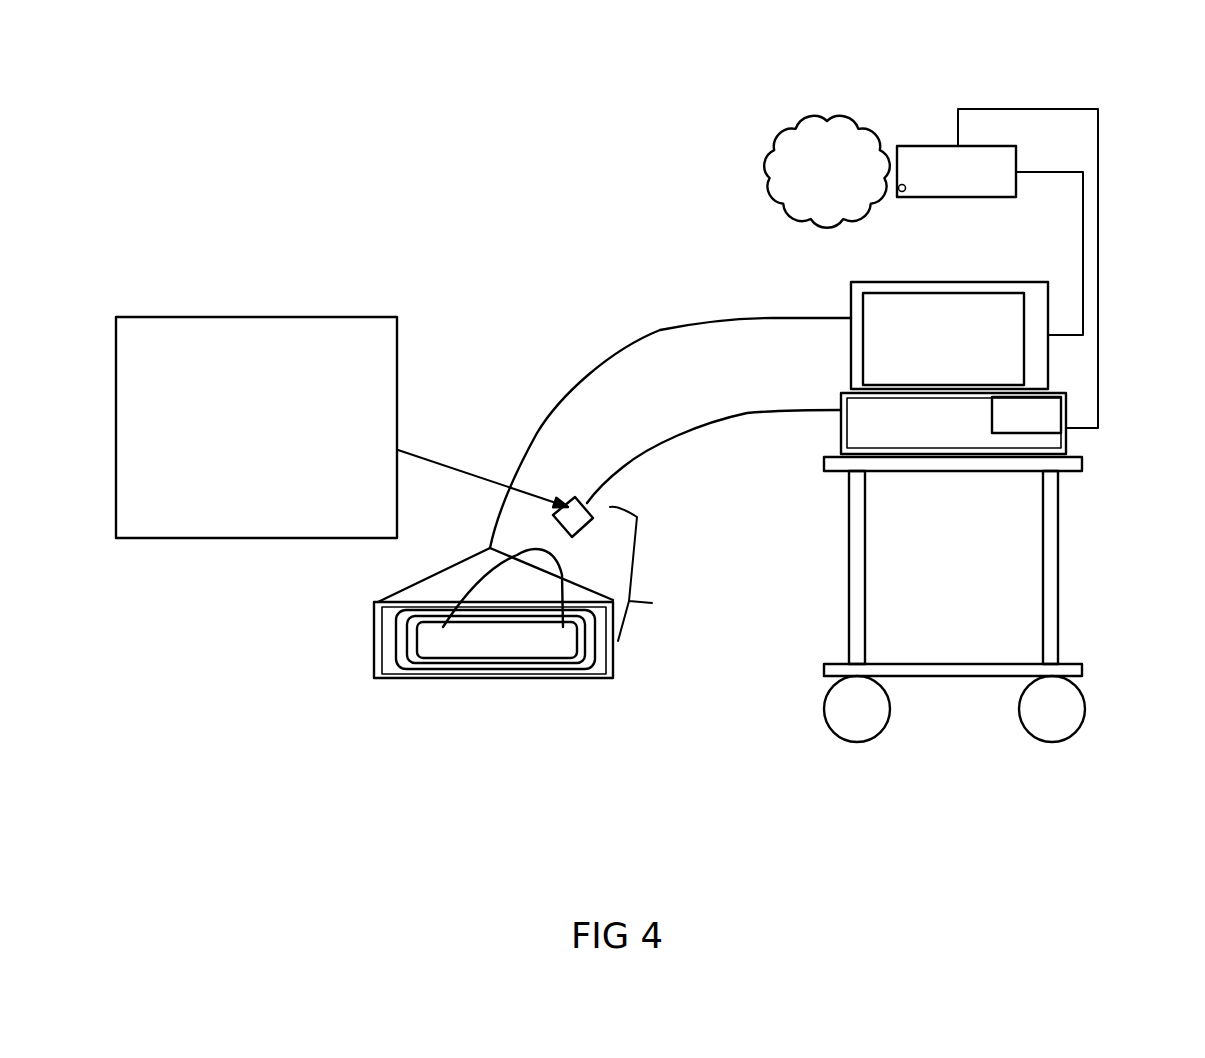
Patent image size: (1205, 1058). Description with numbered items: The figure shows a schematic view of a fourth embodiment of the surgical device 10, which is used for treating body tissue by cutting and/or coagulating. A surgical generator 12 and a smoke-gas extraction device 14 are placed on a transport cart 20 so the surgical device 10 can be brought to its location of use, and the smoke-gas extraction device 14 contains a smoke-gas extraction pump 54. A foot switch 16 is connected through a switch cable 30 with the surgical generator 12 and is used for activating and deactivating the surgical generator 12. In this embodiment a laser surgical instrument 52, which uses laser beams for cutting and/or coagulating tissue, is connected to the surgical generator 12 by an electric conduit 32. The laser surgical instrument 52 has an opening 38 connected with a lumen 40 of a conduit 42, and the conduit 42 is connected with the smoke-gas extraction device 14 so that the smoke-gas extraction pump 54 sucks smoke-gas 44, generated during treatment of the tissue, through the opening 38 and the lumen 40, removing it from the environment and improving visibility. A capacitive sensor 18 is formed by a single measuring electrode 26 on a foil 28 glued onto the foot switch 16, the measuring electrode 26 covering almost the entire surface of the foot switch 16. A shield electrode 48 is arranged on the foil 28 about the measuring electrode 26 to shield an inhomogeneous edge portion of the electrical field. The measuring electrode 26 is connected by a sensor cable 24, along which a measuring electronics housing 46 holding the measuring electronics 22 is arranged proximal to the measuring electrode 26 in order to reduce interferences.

The surgical device 10 is at (418, 338).
The surgical generator 12 is at (972, 300).
The smoke-gas extraction device 14 is at (1010, 442).
The foot switch 16 is at (382, 618).
The capacitive sensor 18 is at (653, 574).
The transport cart 20 is at (1045, 566).
The measuring electronics 22 is at (582, 512).
The sensor cable 24 is at (675, 442).
The measuring electrode 26 is at (508, 640).
The foil 28 is at (403, 642).
The switch cable 30 is at (773, 318).
The electric conduit 32 is at (1085, 265).
The opening 38 is at (905, 190).
The lumen 40 is at (985, 108).
The conduit 42 is at (1100, 152).
The smoke-gas 44 is at (815, 145).
The measuring electronics housing 46 is at (459, 470).
The shield electrode 48 is at (580, 655).
The laser surgical instrument 52 is at (955, 175).
The smoke-gas extraction pump 54 is at (1039, 412).